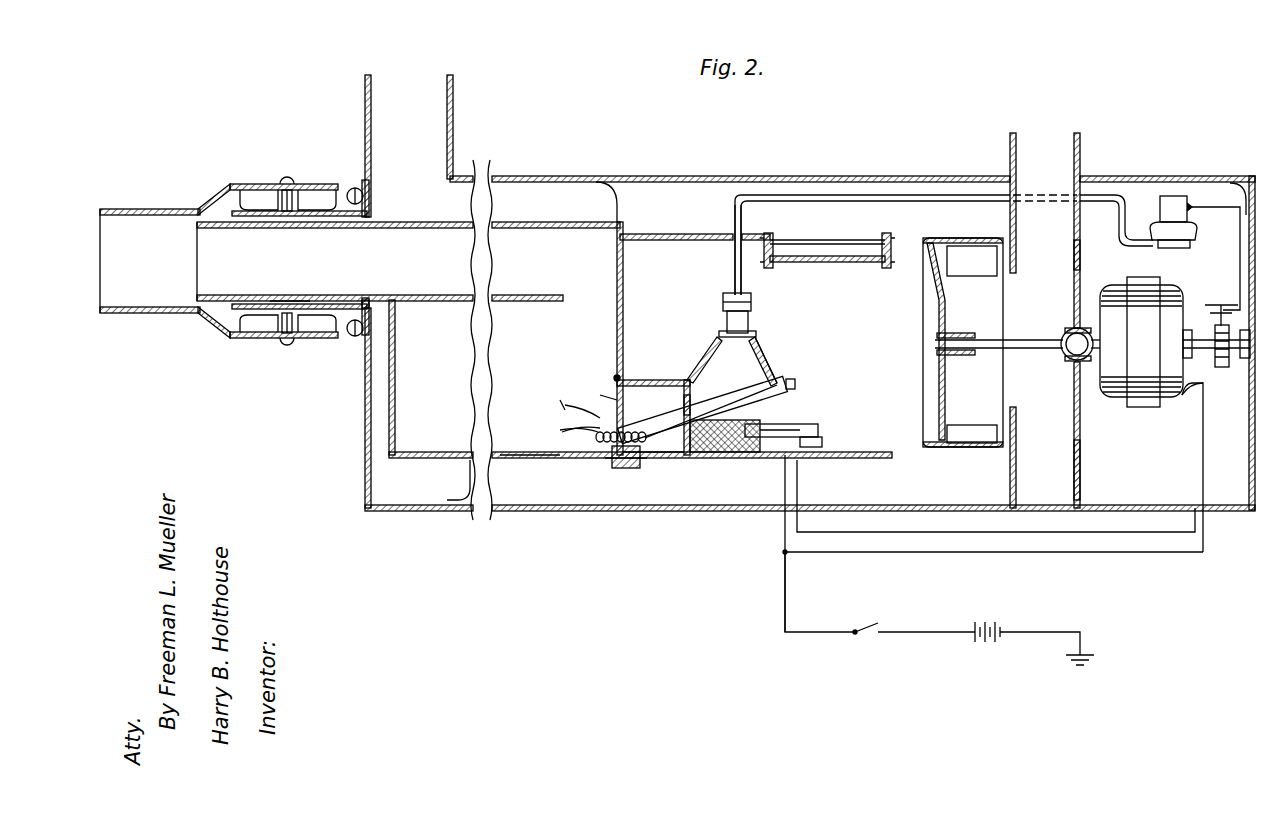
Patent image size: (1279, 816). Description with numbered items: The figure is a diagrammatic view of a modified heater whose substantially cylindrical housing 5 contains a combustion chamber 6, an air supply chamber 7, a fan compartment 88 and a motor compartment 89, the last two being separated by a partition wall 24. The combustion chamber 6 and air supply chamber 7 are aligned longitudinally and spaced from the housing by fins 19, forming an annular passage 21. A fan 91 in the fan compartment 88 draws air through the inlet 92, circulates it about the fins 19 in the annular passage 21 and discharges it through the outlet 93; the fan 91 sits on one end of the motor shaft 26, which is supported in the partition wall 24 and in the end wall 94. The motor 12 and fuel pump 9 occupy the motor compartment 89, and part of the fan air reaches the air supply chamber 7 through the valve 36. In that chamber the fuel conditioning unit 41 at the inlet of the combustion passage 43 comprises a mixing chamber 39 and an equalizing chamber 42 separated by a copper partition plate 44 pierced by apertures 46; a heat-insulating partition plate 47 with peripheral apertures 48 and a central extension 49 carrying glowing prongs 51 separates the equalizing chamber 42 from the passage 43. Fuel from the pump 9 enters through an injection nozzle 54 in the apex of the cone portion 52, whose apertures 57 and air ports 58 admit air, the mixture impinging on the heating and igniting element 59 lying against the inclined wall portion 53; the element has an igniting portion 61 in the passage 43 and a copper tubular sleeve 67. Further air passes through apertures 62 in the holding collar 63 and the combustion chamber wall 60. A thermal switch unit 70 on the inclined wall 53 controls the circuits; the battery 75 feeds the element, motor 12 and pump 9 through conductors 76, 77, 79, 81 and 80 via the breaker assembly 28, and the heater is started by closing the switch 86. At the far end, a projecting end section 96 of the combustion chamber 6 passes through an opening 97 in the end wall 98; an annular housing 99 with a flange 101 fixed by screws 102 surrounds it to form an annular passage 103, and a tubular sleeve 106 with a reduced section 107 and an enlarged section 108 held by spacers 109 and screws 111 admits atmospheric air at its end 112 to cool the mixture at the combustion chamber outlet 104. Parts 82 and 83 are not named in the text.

The housing 5 is at (866, 176).
The outlet 93 is at (453, 88).
The inlet 92 is at (1058, 132).
The end wall 98 is at (365, 447).
The fins 19 is at (576, 511).
The outlet of the combustion chamber 104 is at (200, 266).
The combustion chamber 6 is at (527, 275).
The reduced section 107 is at (122, 208).
The tubular sleeve 106 is at (218, 184).
The enlarged section 108 is at (255, 183).
The spacers 109 is at (228, 339).
The annular passage 103 is at (264, 214).
The annular housing 99 is at (338, 217).
The projecting end section 96 is at (292, 300).
The opening 97 is at (366, 304).
The flange 101 is at (351, 190).
The end 112 is at (341, 340).
The screws 102 is at (365, 331).
The screws 111 is at (288, 348).
The annular passage 21 is at (546, 186).
The air supply chamber 7 is at (695, 273).
The combustion chamber wall 60 is at (623, 324).
The apertures 62 is at (636, 380).
The partition plate 44 is at (686, 380).
The equalizing chamber 42 is at (651, 423).
The valve 36 is at (850, 263).
The fan compartment 88 is at (944, 245).
The apertures 57 is at (733, 314).
The injection nozzle 54 is at (752, 303).
The cone portion 52 is at (757, 334).
The mixing chamber 39 is at (732, 361).
The air ports 58 is at (766, 362).
The fuel conditioning unit 41 is at (781, 386).
The inclined wall portion 53 is at (789, 390).
The apertures 46 is at (690, 408).
The thermal switch unit 70 is at (755, 452).
The heating and igniting element 59 is at (712, 453).
The igniting portion 61 is at (598, 442).
The copper tubular sleeve 67 is at (594, 434).
The extension 49 is at (562, 410).
The apertures 48 is at (610, 392).
The partition plate 47 is at (614, 376).
The prongs 51 is at (562, 400).
The combustion passage 43 is at (521, 428).
The holding collar 63 is at (625, 468).
The conductor 79 is at (800, 486).
The conductor 77 is at (780, 486).
The conductor 81 is at (1135, 553).
The motor support 82 is at (1203, 466).
The arm 83 is at (1194, 394).
The conductor 76 is at (785, 607).
The switch 86 is at (870, 628).
The battery 75 is at (1000, 627).
The fan 91 is at (944, 291).
The motor shaft 26 is at (1045, 352).
The motor 12 is at (1128, 398).
The breaker assembly 28 is at (1220, 305).
The conductor 80 is at (1240, 254).
The fuel pump 9 is at (1176, 195).
The end wall 94 is at (1249, 180).
The motor compartment 89 is at (1098, 255).
The partition wall 24 is at (1080, 470).